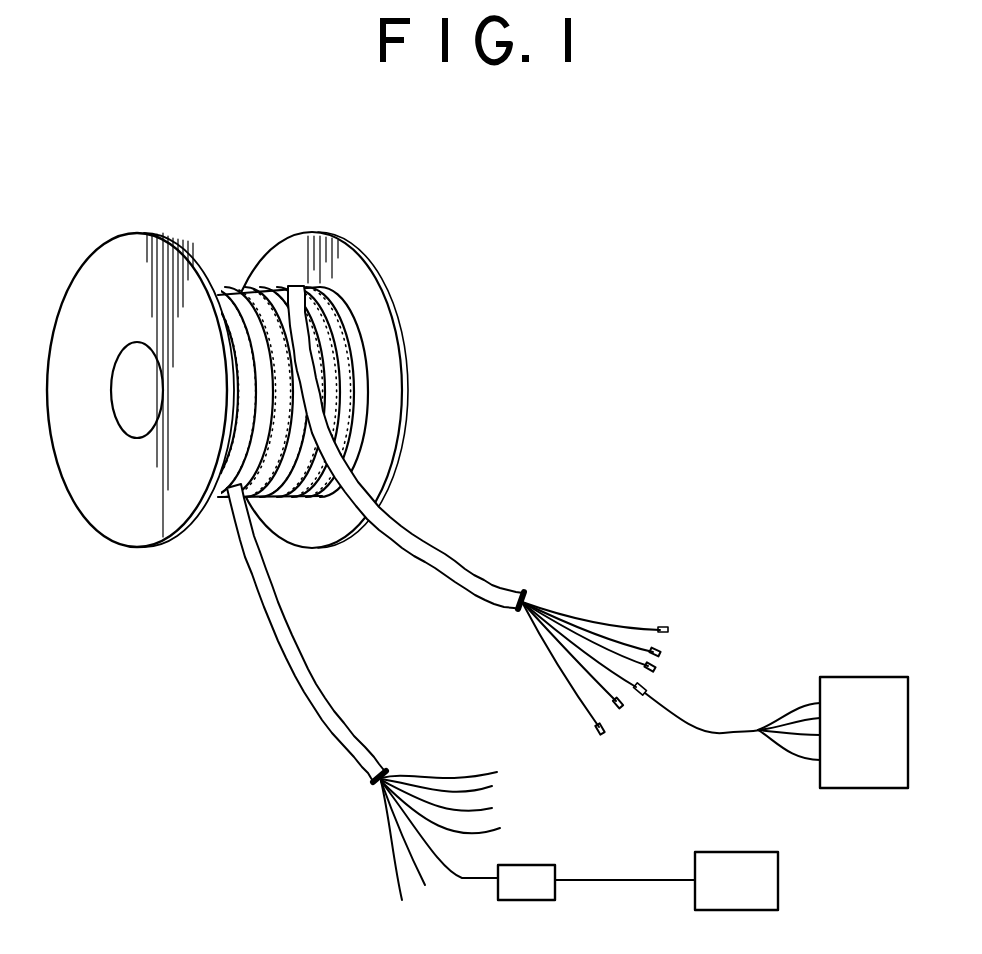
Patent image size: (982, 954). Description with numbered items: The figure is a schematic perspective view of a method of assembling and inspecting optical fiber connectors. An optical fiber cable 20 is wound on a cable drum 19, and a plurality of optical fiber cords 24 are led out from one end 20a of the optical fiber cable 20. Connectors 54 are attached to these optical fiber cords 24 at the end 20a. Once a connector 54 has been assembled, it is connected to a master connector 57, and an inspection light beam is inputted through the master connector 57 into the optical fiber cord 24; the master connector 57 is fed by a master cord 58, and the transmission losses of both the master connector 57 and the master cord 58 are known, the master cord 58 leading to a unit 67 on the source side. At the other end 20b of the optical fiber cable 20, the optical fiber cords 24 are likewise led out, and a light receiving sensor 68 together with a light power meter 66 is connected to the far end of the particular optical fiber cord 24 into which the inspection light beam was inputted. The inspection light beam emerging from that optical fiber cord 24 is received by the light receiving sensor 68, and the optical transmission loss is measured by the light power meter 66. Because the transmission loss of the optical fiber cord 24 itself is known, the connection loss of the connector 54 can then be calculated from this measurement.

The cable drum 19 is at (360, 292).
The optical fiber cable 20 is at (445, 567).
The end of optical fiber cable 20a is at (522, 592).
The other end of optical fiber cable 20b is at (387, 763).
The optical fiber cord 24 is at (597, 620).
The connector 54 is at (663, 627).
The master connector 57 is at (645, 688).
The master cord 58 is at (726, 733).
The light power meter 66 is at (745, 860).
The detector unit 67 is at (886, 752).
The light receiving sensor 68 is at (540, 875).